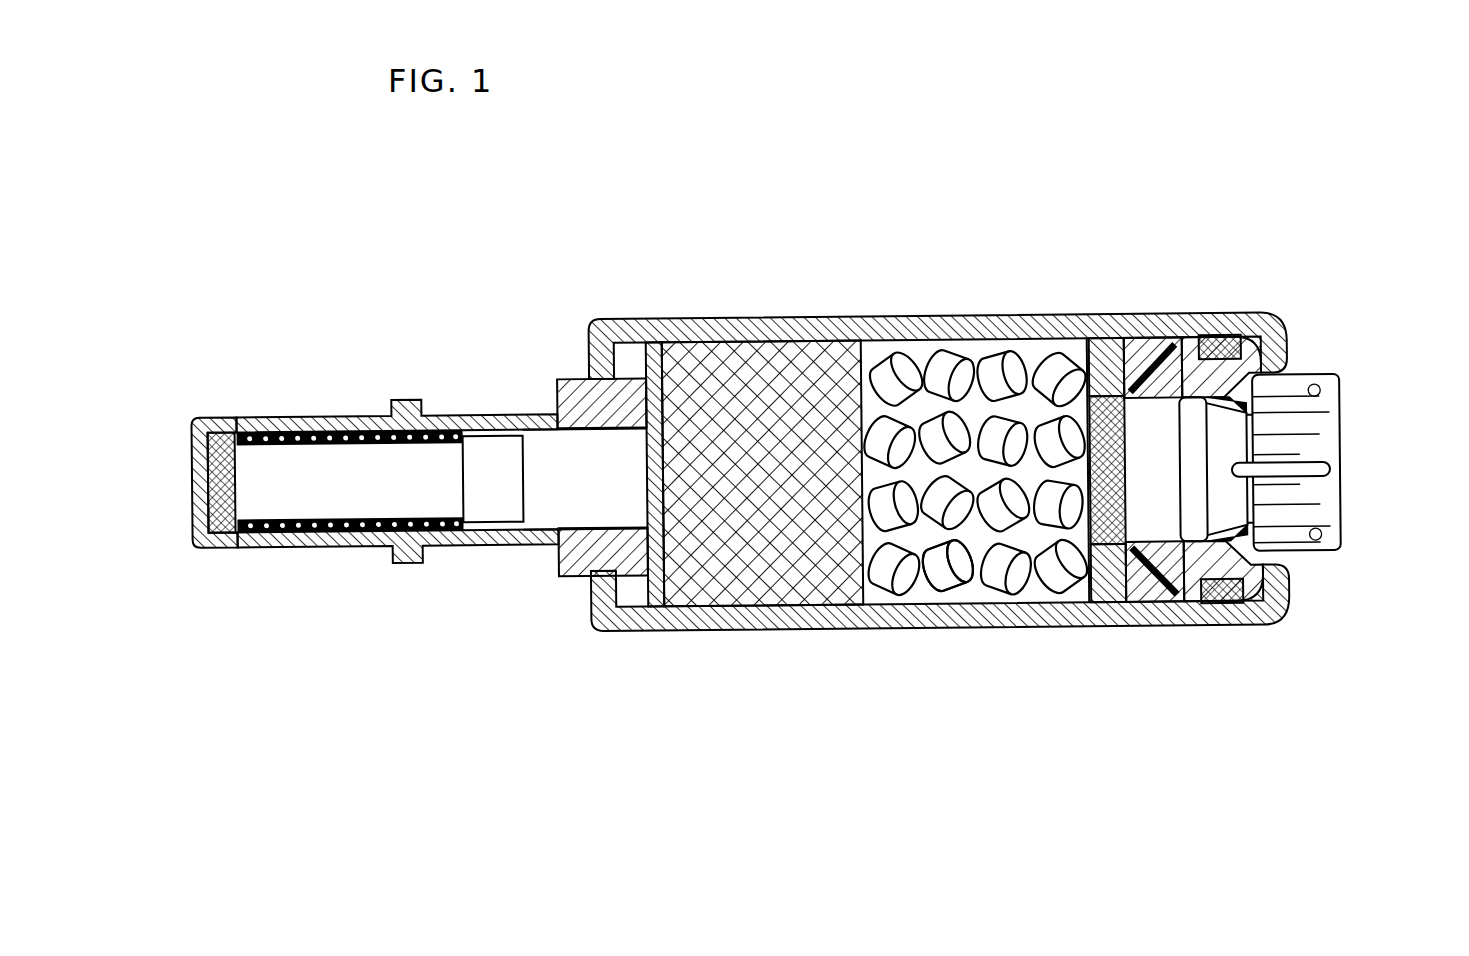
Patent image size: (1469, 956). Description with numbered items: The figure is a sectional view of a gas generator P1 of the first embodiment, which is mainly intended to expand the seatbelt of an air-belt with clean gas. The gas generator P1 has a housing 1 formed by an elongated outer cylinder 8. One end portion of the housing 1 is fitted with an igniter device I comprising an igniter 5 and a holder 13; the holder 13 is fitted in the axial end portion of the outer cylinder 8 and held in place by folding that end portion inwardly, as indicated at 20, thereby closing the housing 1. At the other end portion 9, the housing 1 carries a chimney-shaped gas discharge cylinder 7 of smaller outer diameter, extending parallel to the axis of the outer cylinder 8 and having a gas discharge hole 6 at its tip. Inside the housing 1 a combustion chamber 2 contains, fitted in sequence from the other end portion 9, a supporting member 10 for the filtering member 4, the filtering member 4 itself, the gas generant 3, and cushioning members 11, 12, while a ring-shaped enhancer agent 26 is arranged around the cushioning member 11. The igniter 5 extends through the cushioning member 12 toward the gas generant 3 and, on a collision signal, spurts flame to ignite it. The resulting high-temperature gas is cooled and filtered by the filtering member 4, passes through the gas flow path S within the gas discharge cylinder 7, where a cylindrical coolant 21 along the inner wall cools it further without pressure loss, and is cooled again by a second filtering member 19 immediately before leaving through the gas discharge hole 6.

The gas generator P1 is at (756, 401).
The housing 1 is at (1146, 310).
The outer cylinder 8 is at (1037, 332).
The enhancer agent 26 is at (1078, 342).
The other end portion 9 is at (588, 326).
The supporting member 10 is at (672, 336).
The filtering member 4 is at (815, 366).
The gas discharge cylinder 7 is at (445, 414).
The gas discharge hole 6 is at (201, 483).
The second filtering member 19 is at (226, 416).
The coolant 21 is at (283, 436).
The gas flow path S is at (337, 455).
The combustion chamber 2 is at (975, 590).
The gas generant 3 is at (941, 583).
The cushioning member 11 is at (1094, 598).
The cushioning member 12 is at (1170, 602).
The holder 13 is at (1272, 338).
The seal ring 20 is at (1292, 352).
The igniter 5 is at (1282, 530).
The igniter device I is at (1356, 478).